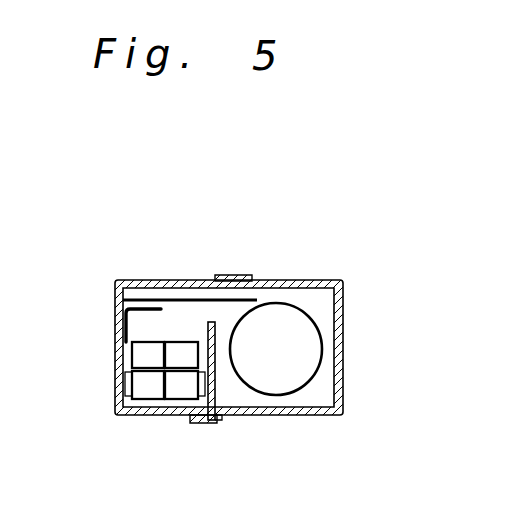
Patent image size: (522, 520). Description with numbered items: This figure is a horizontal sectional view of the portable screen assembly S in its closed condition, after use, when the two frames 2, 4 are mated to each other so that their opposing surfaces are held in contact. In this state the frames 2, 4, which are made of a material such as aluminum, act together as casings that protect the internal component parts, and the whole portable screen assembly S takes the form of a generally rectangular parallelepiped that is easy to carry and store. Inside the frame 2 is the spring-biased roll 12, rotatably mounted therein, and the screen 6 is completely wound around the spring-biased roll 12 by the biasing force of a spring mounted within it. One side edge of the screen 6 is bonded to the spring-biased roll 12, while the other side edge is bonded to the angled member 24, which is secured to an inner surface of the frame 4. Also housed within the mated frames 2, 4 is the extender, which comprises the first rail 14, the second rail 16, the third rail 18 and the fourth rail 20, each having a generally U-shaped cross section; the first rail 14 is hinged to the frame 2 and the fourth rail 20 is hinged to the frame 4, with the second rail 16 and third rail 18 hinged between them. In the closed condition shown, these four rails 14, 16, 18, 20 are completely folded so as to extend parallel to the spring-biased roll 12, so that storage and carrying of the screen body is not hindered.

The frame 2 is at (343, 360).
The frame 4 is at (112, 403).
The screen 6 is at (165, 297).
The spring-biased roll 12 is at (305, 336).
The first rail 14 is at (180, 389).
The second rail 16 is at (183, 350).
The third rail 18 is at (140, 350).
The fourth rail 20 is at (127, 378).
The angled member 24 is at (128, 304).
The portable screen assembly S is at (300, 247).